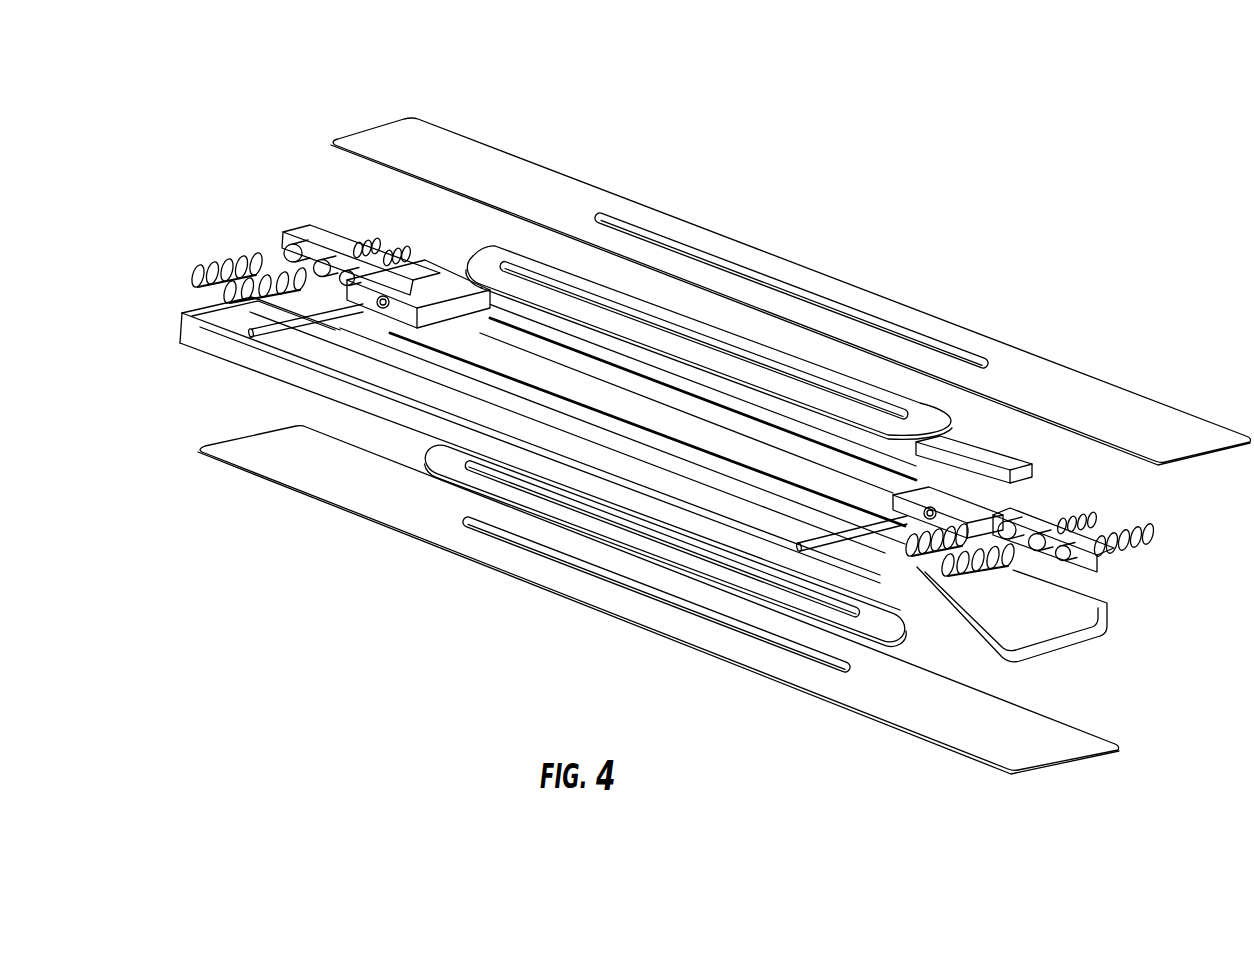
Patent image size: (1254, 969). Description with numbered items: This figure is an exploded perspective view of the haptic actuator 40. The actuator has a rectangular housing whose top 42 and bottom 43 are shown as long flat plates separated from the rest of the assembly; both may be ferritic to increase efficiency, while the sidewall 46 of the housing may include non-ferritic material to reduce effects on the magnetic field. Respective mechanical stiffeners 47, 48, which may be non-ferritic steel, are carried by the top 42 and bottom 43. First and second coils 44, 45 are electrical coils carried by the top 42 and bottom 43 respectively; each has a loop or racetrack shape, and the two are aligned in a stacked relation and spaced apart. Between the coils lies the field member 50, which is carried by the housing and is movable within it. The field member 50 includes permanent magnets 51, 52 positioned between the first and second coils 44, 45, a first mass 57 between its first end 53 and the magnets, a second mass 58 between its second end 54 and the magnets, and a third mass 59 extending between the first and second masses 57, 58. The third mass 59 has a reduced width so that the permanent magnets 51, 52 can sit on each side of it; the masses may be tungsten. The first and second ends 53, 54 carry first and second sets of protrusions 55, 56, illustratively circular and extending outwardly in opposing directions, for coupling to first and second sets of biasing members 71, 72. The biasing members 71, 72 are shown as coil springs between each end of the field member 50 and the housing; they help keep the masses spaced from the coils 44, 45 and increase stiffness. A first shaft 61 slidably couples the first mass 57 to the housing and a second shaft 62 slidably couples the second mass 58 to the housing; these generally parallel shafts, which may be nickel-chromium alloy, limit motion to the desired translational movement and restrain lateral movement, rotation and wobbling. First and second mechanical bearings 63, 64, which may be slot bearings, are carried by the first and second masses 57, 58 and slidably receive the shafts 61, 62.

The haptic actuator 40 is at (229, 74).
The top 42 is at (791, 254).
The bottom 43 is at (624, 600).
The first coil 44 is at (685, 320).
The second coil 45 is at (666, 603).
The sidewall 46 is at (497, 453).
The mechanical stiffener 47 is at (780, 245).
The mechanical stiffener 48 is at (612, 594).
The field member 50 is at (1046, 614).
The permanent magnet 51 is at (1011, 460).
The permanent magnet 52 is at (622, 500).
The first end 53 is at (304, 234).
The second end 54 is at (1064, 602).
The first set of protrusions 55 is at (265, 247).
The second set of protrusions 56 is at (1046, 606).
The first mass 57 is at (366, 354).
The second mass 58 is at (990, 611).
The third mass 59 is at (793, 398).
The first shaft 61 is at (263, 350).
The second shaft 62 is at (818, 614).
The first mechanical bearing 63 is at (315, 413).
The second mechanical bearing 64 is at (865, 621).
The first set of biasing members 71 is at (256, 232).
The second set of biasing members 72 is at (1066, 602).